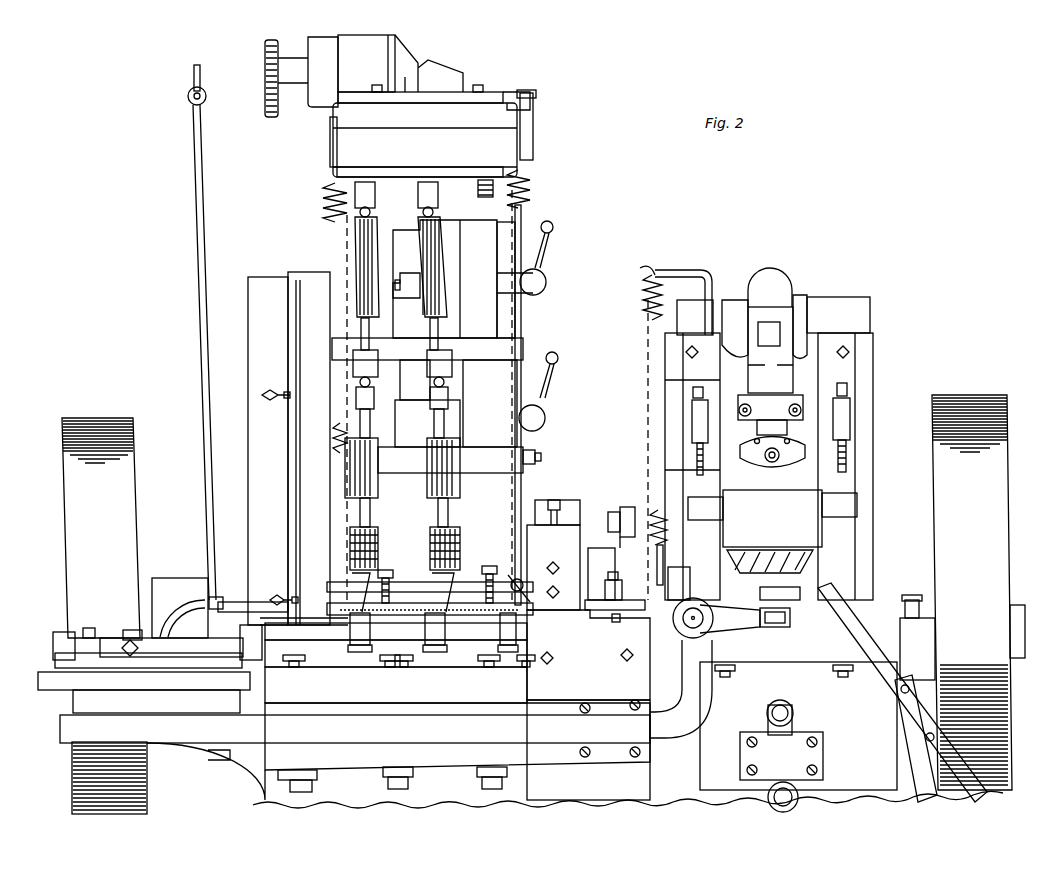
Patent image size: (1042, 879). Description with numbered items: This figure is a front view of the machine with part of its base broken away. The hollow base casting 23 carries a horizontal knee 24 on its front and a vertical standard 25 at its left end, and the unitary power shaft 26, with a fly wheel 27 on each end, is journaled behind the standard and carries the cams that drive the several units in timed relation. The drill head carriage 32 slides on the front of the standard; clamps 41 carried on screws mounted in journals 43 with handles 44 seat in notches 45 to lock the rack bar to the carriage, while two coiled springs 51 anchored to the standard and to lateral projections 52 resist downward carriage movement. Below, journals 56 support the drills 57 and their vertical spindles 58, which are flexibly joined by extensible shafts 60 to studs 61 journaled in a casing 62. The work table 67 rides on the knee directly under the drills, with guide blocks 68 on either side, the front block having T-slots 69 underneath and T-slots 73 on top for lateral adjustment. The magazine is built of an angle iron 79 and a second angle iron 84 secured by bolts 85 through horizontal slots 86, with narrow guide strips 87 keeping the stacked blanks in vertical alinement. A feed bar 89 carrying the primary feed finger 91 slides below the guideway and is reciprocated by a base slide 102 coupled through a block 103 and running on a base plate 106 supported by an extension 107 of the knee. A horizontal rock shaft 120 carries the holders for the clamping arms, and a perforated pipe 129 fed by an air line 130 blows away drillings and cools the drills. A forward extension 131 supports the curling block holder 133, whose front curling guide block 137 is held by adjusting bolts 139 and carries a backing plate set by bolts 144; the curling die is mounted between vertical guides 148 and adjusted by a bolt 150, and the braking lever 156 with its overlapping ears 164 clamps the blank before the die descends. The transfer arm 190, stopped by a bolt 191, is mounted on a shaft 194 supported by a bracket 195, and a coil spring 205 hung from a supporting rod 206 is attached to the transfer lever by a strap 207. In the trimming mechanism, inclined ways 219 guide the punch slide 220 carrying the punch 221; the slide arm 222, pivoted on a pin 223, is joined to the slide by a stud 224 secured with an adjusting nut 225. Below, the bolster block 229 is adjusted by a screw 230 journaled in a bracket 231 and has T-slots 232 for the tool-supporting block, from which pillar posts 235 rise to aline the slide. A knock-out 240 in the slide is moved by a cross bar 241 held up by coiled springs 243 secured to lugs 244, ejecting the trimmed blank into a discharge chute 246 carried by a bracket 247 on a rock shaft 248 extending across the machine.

The base casting 23 is at (290, 806).
The horizontal knee 24 is at (367, 747).
The vertical standard 25 is at (516, 228).
The power shaft 26 is at (1008, 628).
The fly wheel 27 is at (62, 448).
The carriage 32 is at (482, 258).
The clamps 41 is at (395, 288).
The journals 43 is at (495, 310).
The handles 44 is at (548, 283).
The notches 45 is at (405, 299).
The coiled springs 51 is at (316, 186).
The lateral projections 52 is at (536, 460).
The journals 56 is at (433, 468).
The drills 57 is at (448, 600).
The vertical spindles 58 is at (443, 517).
The extensible shafts 60 is at (377, 228).
The studs 61 is at (492, 185).
The casing 62 is at (503, 141).
The work table 67 is at (396, 663).
The guide blocks 68 is at (334, 660).
The transverse T-slots 69 is at (396, 667).
The transverse T-slots 73 is at (381, 659).
The angle iron 79 is at (257, 283).
The angle iron 84 is at (290, 474).
The bolts 85 is at (277, 598).
The horizontal slots 86 is at (268, 399).
The guide strips 87 is at (312, 282).
The feed bar 89 is at (193, 650).
The primary feed finger 91 is at (247, 640).
The base slide 102 is at (58, 674).
The block 103 is at (55, 660).
The base plate 106 is at (75, 703).
The extension 107 is at (62, 726).
The rock shaft 120 is at (405, 598).
The perforated pipe 129 is at (463, 648).
The air line 130 is at (197, 300).
The forward extension 131 is at (552, 750).
The curling block holder 133 is at (655, 680).
The front curling guide block 137 is at (578, 632).
The adjusting bolts 139 is at (622, 656).
The bolts 144 is at (543, 616).
The vertical guides 148 is at (513, 538).
The bolt 150 is at (556, 498).
The lever 156 is at (537, 613).
The overlapping ears 164 is at (525, 566).
The transfer arm 190 is at (745, 618).
The bolt 191 is at (629, 625).
The shaft 194 is at (695, 624).
The bracket 195 is at (695, 700).
The coil spring 205 is at (652, 310).
The supporting rod 206 is at (687, 267).
The strap 207 is at (655, 553).
The inclined ways 219 is at (687, 378).
The punch slide 220 is at (815, 505).
The punch 221 is at (815, 572).
The slide arm 222 is at (768, 290).
The pin 223 is at (863, 322).
The stud 224 is at (786, 358).
The adjusting nut 225 is at (800, 442).
The bolster block 229 is at (848, 723).
The screw 230 is at (781, 700).
The bracket 231 is at (768, 773).
The transverse T-slots 232 is at (845, 677).
The pillar posts 235 is at (858, 592).
The knock-out 240 is at (768, 593).
The cross bar 241 is at (850, 510).
The coiled springs 243 is at (850, 482).
The lugs 244 is at (846, 456).
The discharge chute 246 is at (958, 710).
The bracket 247 is at (925, 797).
The rock shaft 248 is at (767, 797).